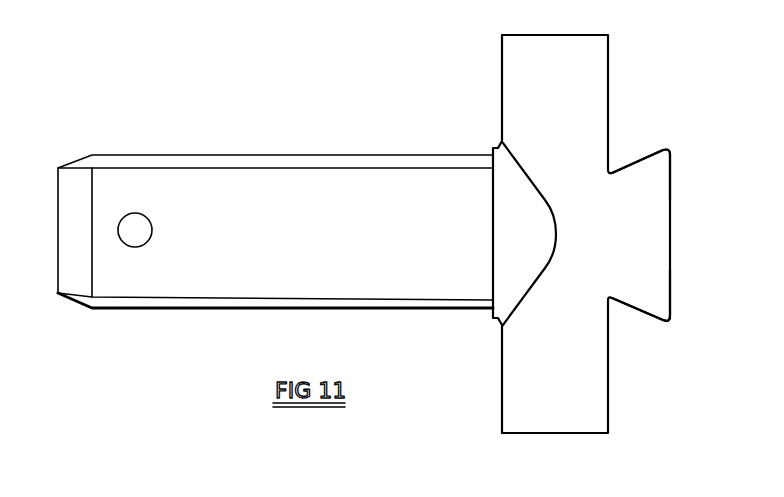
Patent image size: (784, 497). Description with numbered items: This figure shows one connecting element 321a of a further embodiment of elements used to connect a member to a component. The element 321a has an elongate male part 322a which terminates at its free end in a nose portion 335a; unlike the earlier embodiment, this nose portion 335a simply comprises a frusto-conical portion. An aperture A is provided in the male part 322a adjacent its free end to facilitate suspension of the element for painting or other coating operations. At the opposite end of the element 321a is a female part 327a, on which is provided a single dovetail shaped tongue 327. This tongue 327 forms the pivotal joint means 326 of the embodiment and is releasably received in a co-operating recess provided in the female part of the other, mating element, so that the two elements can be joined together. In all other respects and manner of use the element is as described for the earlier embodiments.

The nose portion 335a is at (74, 183).
The male part 322a is at (196, 178).
The element 321a is at (388, 167).
The pivotal joint means 326 is at (680, 163).
The dovetail shape tongue 327 is at (648, 228).
The female part 327a is at (682, 302).
The aperture A is at (149, 243).